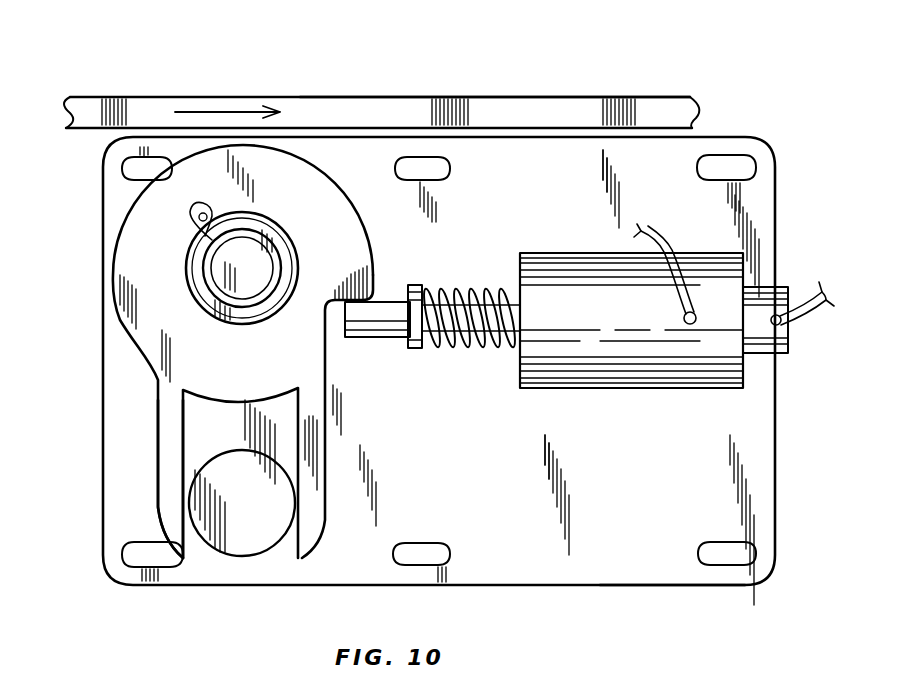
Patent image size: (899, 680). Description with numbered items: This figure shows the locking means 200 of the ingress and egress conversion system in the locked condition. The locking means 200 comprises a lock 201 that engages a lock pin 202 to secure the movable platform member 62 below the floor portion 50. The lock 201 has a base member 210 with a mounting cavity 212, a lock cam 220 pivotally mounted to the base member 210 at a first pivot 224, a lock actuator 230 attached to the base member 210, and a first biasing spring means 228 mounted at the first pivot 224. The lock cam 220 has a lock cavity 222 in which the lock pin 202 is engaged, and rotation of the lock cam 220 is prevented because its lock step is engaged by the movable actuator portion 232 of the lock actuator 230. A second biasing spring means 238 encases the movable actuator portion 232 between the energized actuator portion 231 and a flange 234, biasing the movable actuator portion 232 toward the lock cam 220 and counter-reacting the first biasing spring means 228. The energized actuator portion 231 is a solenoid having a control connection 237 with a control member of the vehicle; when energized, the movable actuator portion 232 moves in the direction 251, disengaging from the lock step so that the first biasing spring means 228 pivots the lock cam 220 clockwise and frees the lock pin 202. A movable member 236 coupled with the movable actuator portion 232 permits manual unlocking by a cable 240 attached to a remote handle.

The webbing strap 50 is at (152, 78).
The direction 251 is at (237, 112).
The mounting cavity 212 is at (421, 160).
The platform member 62 is at (465, 97).
The first biasing spring means 228 is at (272, 232).
The first pivot 224 is at (228, 272).
The energized actuator portion 231 is at (577, 258).
The control connection 237 is at (663, 245).
The cable 240 is at (813, 300).
The movable actuator portion 232 is at (362, 327).
The second biasing spring means 238 is at (477, 327).
The flange 234 is at (413, 348).
The movable member 236 is at (778, 337).
The lock cam 220 is at (163, 378).
The base member 210 is at (777, 432).
The lock 201 is at (620, 447).
The lock cavity 222 is at (193, 548).
The lock pin 202 is at (242, 543).
The locking means 200 is at (482, 477).
The lock actuator 230 is at (665, 617).